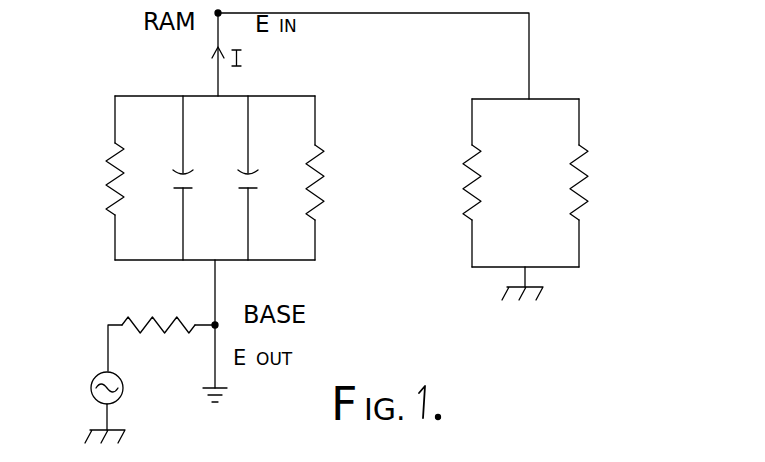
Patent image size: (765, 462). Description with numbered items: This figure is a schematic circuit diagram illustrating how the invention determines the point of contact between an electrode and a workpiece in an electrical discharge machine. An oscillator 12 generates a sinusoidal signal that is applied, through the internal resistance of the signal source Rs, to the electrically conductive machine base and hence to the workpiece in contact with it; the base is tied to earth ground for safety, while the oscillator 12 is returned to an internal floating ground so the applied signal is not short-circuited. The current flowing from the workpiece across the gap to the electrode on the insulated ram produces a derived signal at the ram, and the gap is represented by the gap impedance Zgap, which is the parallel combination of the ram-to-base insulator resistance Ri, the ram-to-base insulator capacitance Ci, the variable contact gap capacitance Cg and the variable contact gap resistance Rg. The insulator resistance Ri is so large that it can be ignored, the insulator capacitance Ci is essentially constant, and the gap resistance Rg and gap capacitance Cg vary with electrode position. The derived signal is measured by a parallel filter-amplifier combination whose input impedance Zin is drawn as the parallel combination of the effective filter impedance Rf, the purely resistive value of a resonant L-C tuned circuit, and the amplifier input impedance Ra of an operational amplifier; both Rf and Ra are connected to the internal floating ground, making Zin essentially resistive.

The oscillator 12 is at (125, 394).
The ram-to-base insulator resistance Ri is at (100, 195).
The ram-to-base insulator capacitance Ci is at (177, 170).
The contact gap capacitance Cg is at (250, 171).
The contact gap resistance Rg is at (318, 201).
The gap impedance Zgap is at (214, 229).
The effective filter impedance Rf is at (463, 184).
The input impedance Zin is at (521, 194).
The amplifier input impedance Ra is at (585, 186).
The internal resistance of the signal source Rs is at (151, 318).